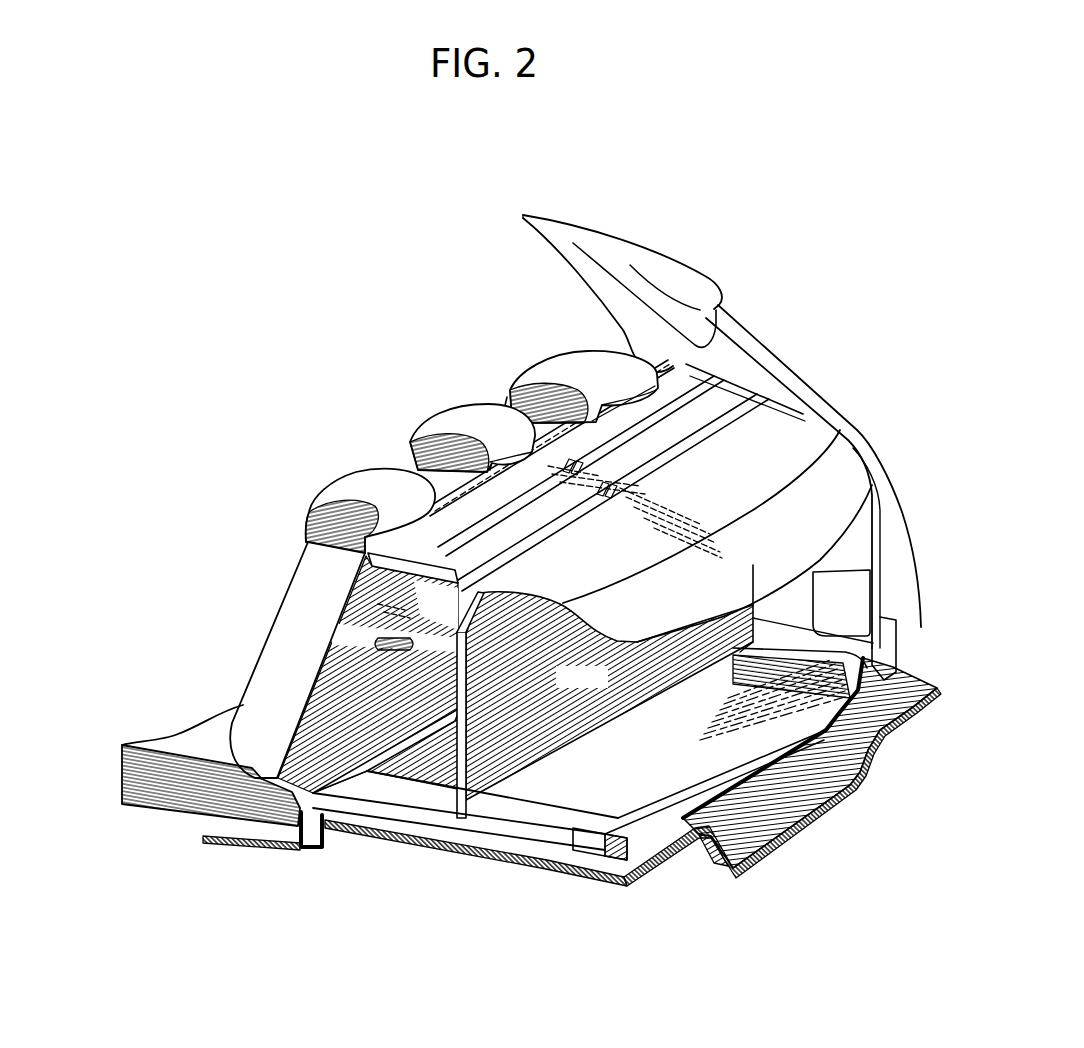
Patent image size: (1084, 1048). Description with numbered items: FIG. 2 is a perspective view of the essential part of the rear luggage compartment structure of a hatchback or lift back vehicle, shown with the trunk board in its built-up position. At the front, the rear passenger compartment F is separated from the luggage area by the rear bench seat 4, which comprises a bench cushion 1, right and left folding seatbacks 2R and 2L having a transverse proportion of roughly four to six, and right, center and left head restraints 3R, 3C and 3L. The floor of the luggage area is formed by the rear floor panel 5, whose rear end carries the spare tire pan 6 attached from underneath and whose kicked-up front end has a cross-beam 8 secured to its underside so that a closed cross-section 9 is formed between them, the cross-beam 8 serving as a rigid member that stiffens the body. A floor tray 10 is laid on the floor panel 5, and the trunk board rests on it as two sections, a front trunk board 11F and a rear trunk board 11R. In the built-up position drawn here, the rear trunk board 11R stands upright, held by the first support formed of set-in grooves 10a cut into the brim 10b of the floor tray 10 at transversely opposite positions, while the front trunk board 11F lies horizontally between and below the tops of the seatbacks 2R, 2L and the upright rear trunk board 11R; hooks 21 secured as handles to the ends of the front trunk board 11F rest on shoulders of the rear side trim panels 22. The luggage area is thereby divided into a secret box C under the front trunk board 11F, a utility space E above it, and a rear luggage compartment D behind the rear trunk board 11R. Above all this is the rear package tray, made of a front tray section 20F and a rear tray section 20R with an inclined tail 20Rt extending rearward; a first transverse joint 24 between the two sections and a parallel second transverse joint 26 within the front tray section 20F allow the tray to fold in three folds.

The bench cushion 1 is at (150, 742).
The left folding seatback 2L is at (270, 626).
The right folding seatback 2R is at (500, 398).
The left head restraint 3L is at (347, 481).
The center head restraint 3C is at (438, 433).
The right head restraint 3R is at (568, 357).
The rear bench seat 4 is at (266, 534).
The rear floor panel 5 is at (431, 840).
The spare tire pan 6 is at (857, 774).
The cross-beam 8 is at (326, 832).
The closed cross-section 9 is at (270, 830).
The floor tray 10 is at (652, 832).
The set-in grooves 10a is at (768, 642).
The brim 10b is at (576, 834).
The front trunk board 11F is at (503, 581).
The rear trunk board 11R is at (609, 696).
The front tray section 20F is at (757, 339).
The rear tray section 20R is at (805, 426).
The inclined tail 20Rt is at (862, 465).
The hooks 21 is at (376, 644).
The rear side trim panels 22 is at (790, 594).
The first transverse joint 24 is at (698, 442).
The second transverse joint 26 is at (633, 437).
The secret box C is at (423, 687).
The rear luggage compartment D is at (683, 764).
The utility space E is at (447, 617).
The rear passenger compartment F is at (292, 381).